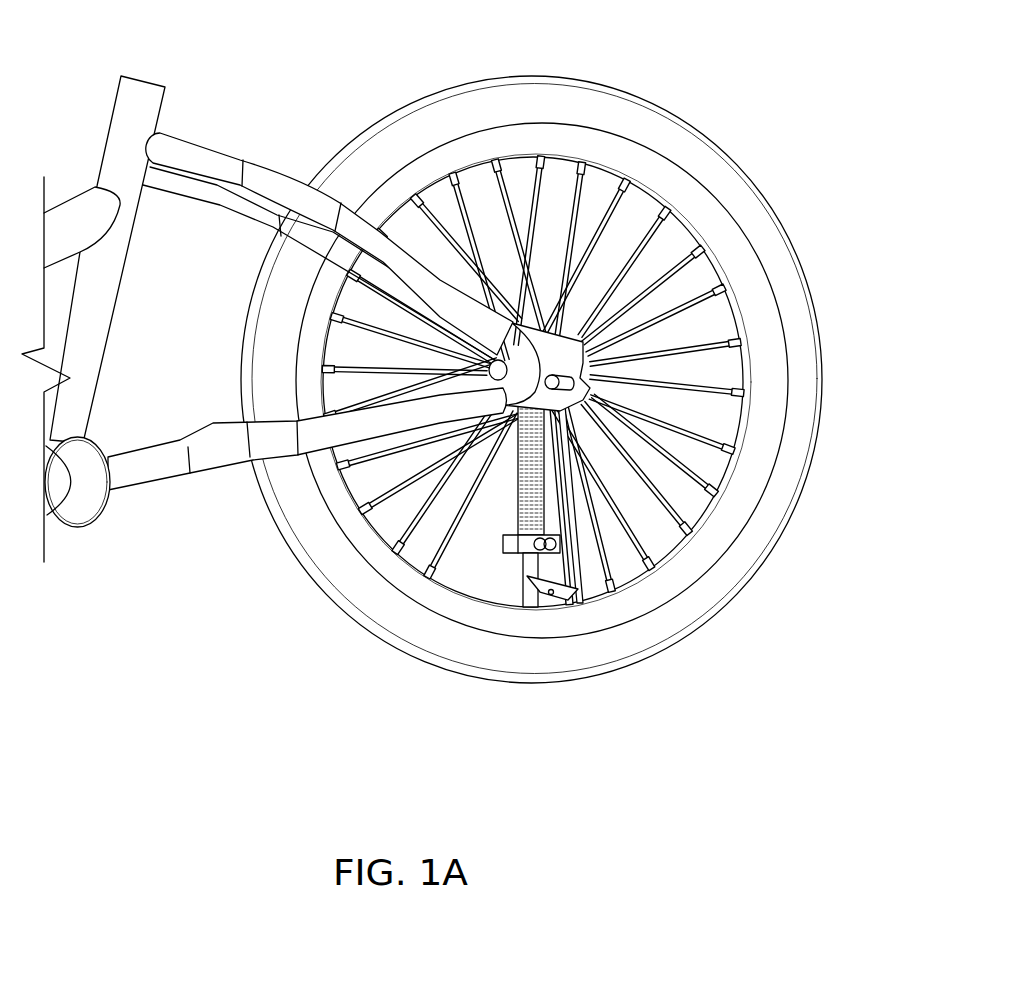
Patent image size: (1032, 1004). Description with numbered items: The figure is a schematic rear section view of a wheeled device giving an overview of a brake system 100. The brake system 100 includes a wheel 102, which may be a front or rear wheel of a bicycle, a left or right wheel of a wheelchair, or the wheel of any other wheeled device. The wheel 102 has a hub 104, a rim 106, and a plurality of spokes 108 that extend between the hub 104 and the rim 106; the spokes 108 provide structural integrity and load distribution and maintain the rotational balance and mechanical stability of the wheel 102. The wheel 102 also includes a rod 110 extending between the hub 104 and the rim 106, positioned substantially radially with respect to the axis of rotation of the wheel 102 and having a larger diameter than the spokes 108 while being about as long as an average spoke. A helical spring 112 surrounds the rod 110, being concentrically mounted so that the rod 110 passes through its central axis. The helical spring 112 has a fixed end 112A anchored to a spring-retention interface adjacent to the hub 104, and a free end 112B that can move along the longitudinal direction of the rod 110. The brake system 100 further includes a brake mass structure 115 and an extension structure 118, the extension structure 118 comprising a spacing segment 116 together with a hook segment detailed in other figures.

The brake system 100 is at (791, 92).
The wheel 102 is at (346, 643).
The hub 104 is at (705, 340).
The rim 106 is at (733, 458).
The spokes 108 is at (564, 347).
The rod 110 is at (523, 587).
The helical spring 112 is at (573, 541).
The fixed end 112A is at (575, 407).
The free end 112B is at (712, 529).
The brake mass structure 115 is at (505, 544).
The spacing segment 116 is at (563, 552).
The extension structure 118 is at (598, 560).